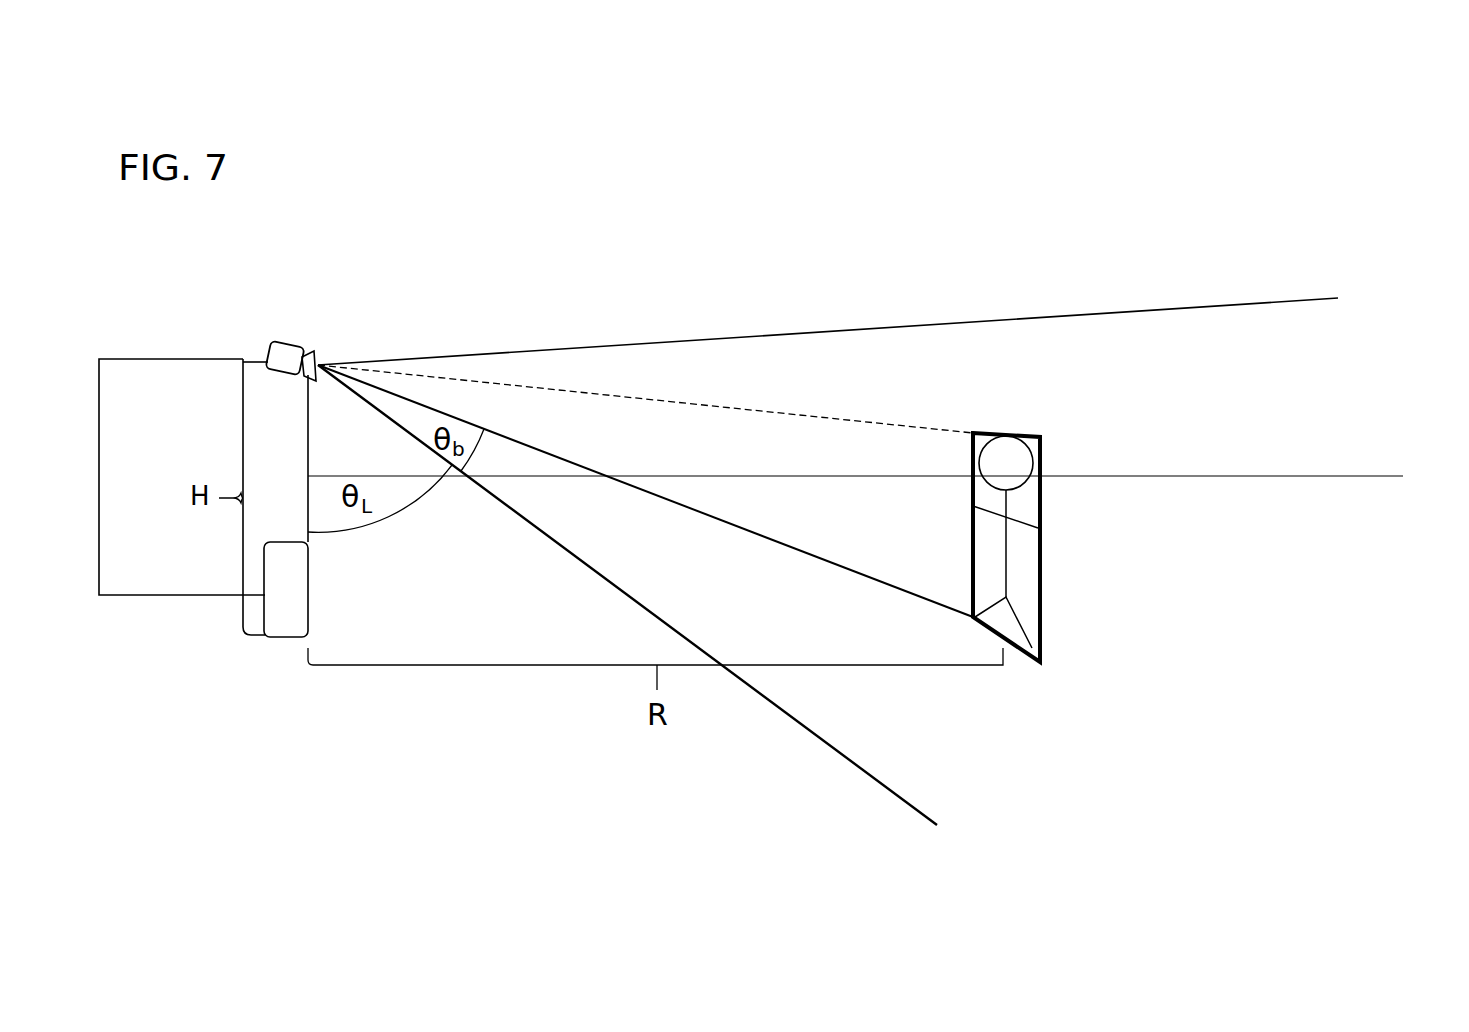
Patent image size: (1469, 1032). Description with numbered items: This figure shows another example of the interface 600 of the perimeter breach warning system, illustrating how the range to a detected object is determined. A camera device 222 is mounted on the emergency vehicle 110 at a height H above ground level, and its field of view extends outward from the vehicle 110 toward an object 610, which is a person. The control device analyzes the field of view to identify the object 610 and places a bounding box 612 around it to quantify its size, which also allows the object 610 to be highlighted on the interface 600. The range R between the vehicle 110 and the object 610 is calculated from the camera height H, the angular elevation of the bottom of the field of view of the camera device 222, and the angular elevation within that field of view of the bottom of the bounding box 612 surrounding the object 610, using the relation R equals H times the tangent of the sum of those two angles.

The emergency vehicle 110 is at (147, 370).
The camera device 222 is at (293, 355).
The interface 600 is at (1335, 160).
The object 610 is at (1068, 534).
The bounding box 612 is at (1041, 460).